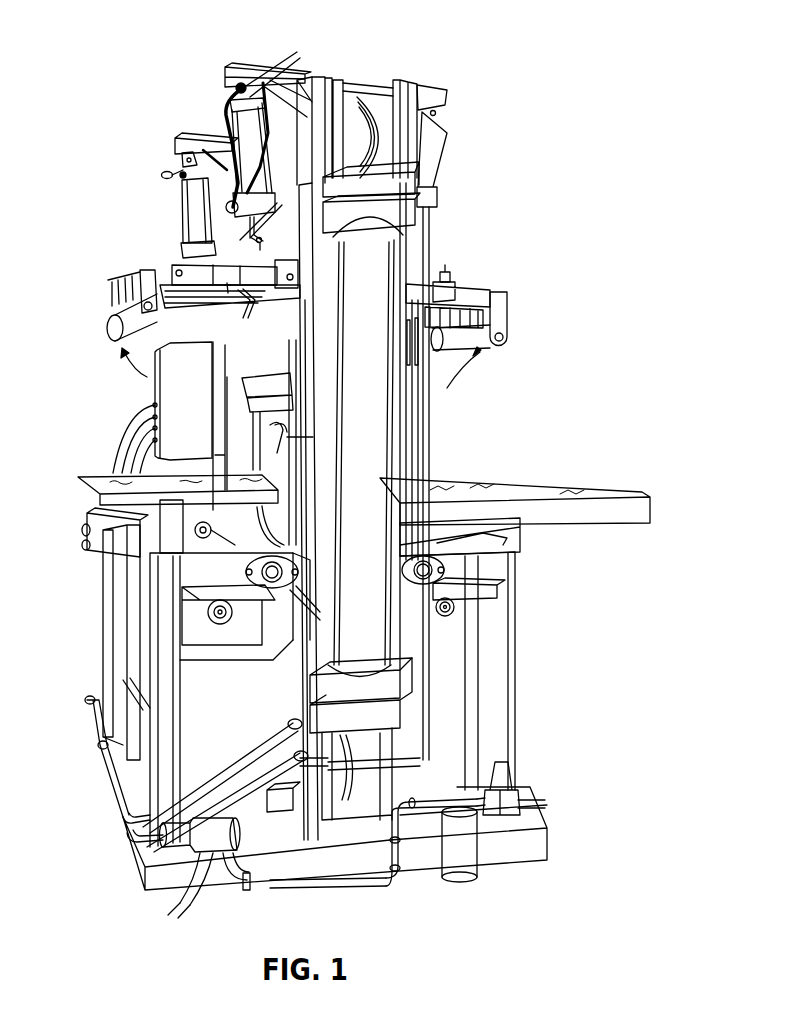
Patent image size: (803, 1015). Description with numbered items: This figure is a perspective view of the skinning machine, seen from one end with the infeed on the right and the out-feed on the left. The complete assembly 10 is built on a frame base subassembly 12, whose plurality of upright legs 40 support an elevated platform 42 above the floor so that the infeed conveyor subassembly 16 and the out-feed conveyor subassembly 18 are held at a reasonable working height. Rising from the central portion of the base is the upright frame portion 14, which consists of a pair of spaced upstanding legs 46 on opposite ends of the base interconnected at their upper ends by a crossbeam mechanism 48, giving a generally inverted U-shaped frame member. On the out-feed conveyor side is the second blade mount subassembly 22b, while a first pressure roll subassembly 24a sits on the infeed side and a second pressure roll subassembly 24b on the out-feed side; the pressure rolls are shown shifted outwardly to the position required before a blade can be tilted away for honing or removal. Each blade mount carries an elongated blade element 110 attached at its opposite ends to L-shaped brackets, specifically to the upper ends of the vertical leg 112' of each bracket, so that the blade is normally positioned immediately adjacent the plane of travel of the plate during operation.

The complete assembly 10 is at (458, 69).
The frame base subassembly 12 is at (509, 570).
The upright frame portion 14 is at (400, 81).
The infeed conveyor subassembly 16 is at (532, 487).
The out-feed conveyor subassembly 18 is at (101, 478).
The second blade mount subassembly 22b is at (288, 384).
The first pressure roll subassembly 24a is at (478, 290).
The second pressure roll subassembly 24b is at (162, 264).
The upright legs 40 is at (118, 622).
The elevated platform 42 is at (204, 581).
The upstanding legs 46 is at (297, 183).
The crossbeam mechanism 48 is at (311, 95).
The blade element 110 is at (258, 380).
The vertical leg 112' is at (274, 426).